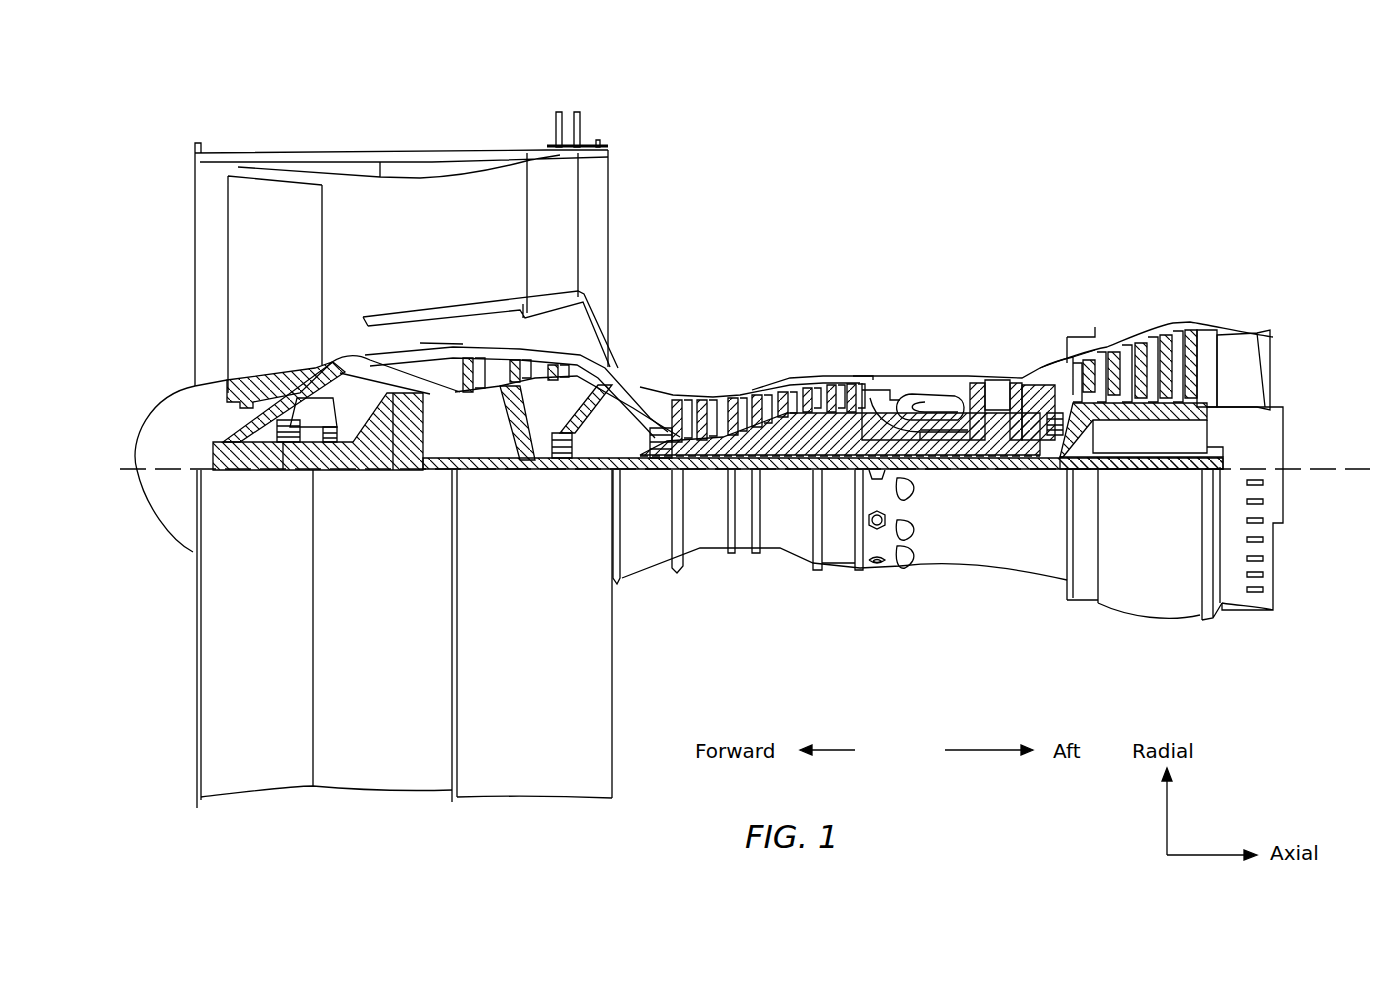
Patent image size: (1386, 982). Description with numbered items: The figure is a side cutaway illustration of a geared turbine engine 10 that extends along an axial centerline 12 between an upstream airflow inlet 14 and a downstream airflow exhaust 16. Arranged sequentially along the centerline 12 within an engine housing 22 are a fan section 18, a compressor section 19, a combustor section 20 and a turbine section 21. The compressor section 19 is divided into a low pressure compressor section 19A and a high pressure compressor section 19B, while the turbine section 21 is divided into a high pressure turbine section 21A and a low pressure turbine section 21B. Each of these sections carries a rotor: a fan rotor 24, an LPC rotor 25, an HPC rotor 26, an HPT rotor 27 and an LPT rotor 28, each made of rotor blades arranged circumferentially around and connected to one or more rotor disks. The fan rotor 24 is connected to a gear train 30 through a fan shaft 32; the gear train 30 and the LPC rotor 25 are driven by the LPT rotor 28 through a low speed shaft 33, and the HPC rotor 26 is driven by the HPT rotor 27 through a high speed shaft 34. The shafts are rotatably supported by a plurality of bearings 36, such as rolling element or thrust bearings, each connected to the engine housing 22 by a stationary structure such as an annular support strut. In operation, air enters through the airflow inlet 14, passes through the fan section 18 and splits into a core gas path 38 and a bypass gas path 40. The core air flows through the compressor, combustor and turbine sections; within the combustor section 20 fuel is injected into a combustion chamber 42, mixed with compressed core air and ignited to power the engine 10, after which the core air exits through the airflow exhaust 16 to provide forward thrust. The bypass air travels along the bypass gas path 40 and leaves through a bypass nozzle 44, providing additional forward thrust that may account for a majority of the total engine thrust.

The geared turbine engine 10 is at (163, 134).
The axial centerline 12 is at (1333, 472).
The airflow inlet 14 is at (194, 227).
The airflow exhaust 16 is at (1273, 366).
The fan section 18 is at (368, 128).
The compressor section 19 is at (835, 72).
The low pressure compressor section 19A is at (612, 112).
The high pressure compressor section 19B is at (835, 305).
The combustor section 20 is at (960, 305).
The turbine section 21 is at (1230, 235).
The high pressure turbine section 21A is at (1048, 305).
The low pressure turbine section 21B is at (1230, 305).
The engine housing 22 is at (630, 579).
The fan rotor 24 is at (222, 398).
The LPC rotor 25 is at (517, 440).
The HPC rotor 26 is at (792, 457).
The HPT rotor 27 is at (1013, 462).
The LPT rotor 28 is at (1140, 415).
The gear train 30 is at (407, 470).
The fan shaft 32 is at (263, 470).
The low speed shaft 33 is at (841, 472).
The high speed shaft 34 is at (933, 460).
The bearings 36 is at (305, 455).
The core gas path 38 is at (634, 398).
The bypass gas path 40 is at (458, 244).
The combustion chamber 42 is at (920, 403).
The bypass nozzle 44 is at (608, 207).